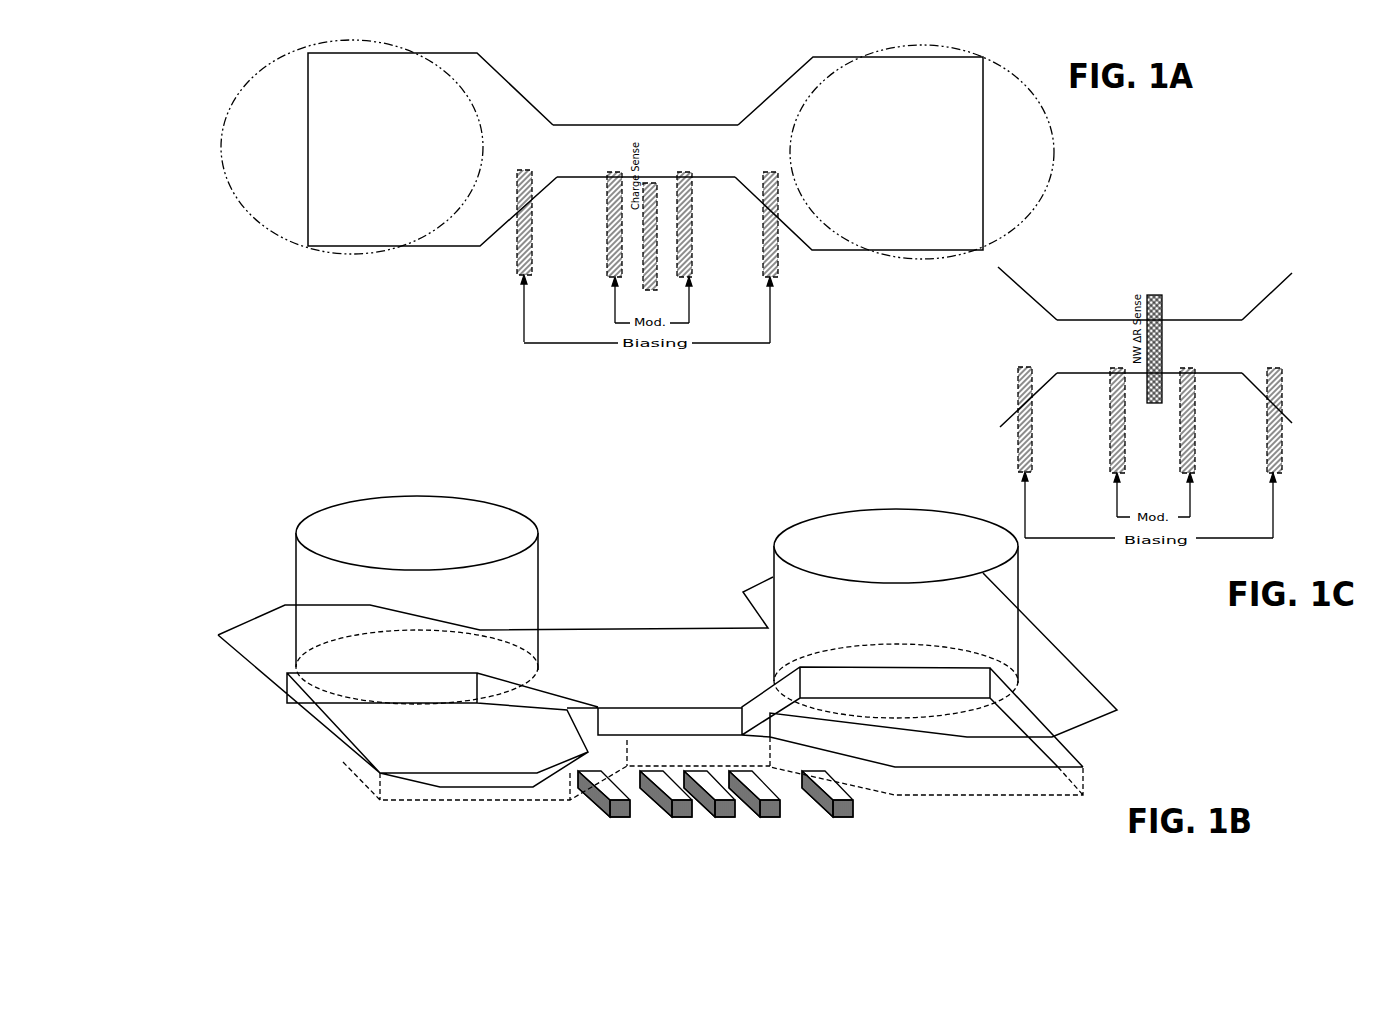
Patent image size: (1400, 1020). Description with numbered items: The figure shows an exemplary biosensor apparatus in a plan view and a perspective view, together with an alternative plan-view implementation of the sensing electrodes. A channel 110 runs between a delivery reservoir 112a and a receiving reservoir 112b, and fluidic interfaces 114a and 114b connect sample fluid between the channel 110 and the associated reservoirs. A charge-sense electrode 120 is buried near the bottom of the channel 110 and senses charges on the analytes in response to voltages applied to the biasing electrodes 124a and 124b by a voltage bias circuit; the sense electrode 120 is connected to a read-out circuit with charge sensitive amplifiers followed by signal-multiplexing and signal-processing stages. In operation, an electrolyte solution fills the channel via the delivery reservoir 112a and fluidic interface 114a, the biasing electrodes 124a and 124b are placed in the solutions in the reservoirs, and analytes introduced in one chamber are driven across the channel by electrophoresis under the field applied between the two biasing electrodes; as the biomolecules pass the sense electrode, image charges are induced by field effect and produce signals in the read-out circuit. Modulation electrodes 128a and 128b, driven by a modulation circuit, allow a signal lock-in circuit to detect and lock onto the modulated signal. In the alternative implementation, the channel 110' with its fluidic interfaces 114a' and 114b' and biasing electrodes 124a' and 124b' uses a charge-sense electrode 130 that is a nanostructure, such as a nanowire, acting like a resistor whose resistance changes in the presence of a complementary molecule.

In FIG. 1A, the channel 110 is at (645, 116).
In FIG. 1A, the delivery reservoir 112a is at (323, 523).
In FIG. 1B, the delivery reservoir 112a is at (417, 600).
In FIG. 1A, the receiving reservoir 112b is at (905, 507).
In FIG. 1B, the receiving reservoir 112b is at (896, 613).
In FIG. 1A, the fluidic interface 114a is at (432, 138).
In FIG. 1A, the fluidic interface 114b is at (853, 144).
In FIG. 1A, the charge-sense electrode 120 is at (657, 257).
In FIG. 1B, the charge-sense electrode 120 is at (730, 818).
In FIG. 1A, the biasing electrode 124a is at (486, 256).
In FIG. 1B, the biasing electrode 124a is at (583, 830).
In FIG. 1A, the biasing electrode 124b is at (797, 257).
In FIG. 1B, the biasing electrode 124b is at (842, 823).
In FIG. 1A, the modulation electrode 128a is at (610, 193).
In FIG. 1A, the modulation electrode 128b is at (693, 203).
In FIG. 1C, the nanowire channel 110' is at (1148, 346).
In FIG. 1C, the first contact pad 114a' is at (1046, 334).
In FIG. 1C, the second contact pad 114b' is at (1261, 335).
In FIG. 1C, the first biasing electrode 124a' is at (1054, 452).
In FIG. 1C, the second biasing electrode 124b' is at (1246, 453).
In FIG. 1C, the charge-sense electrode 130 is at (1170, 307).